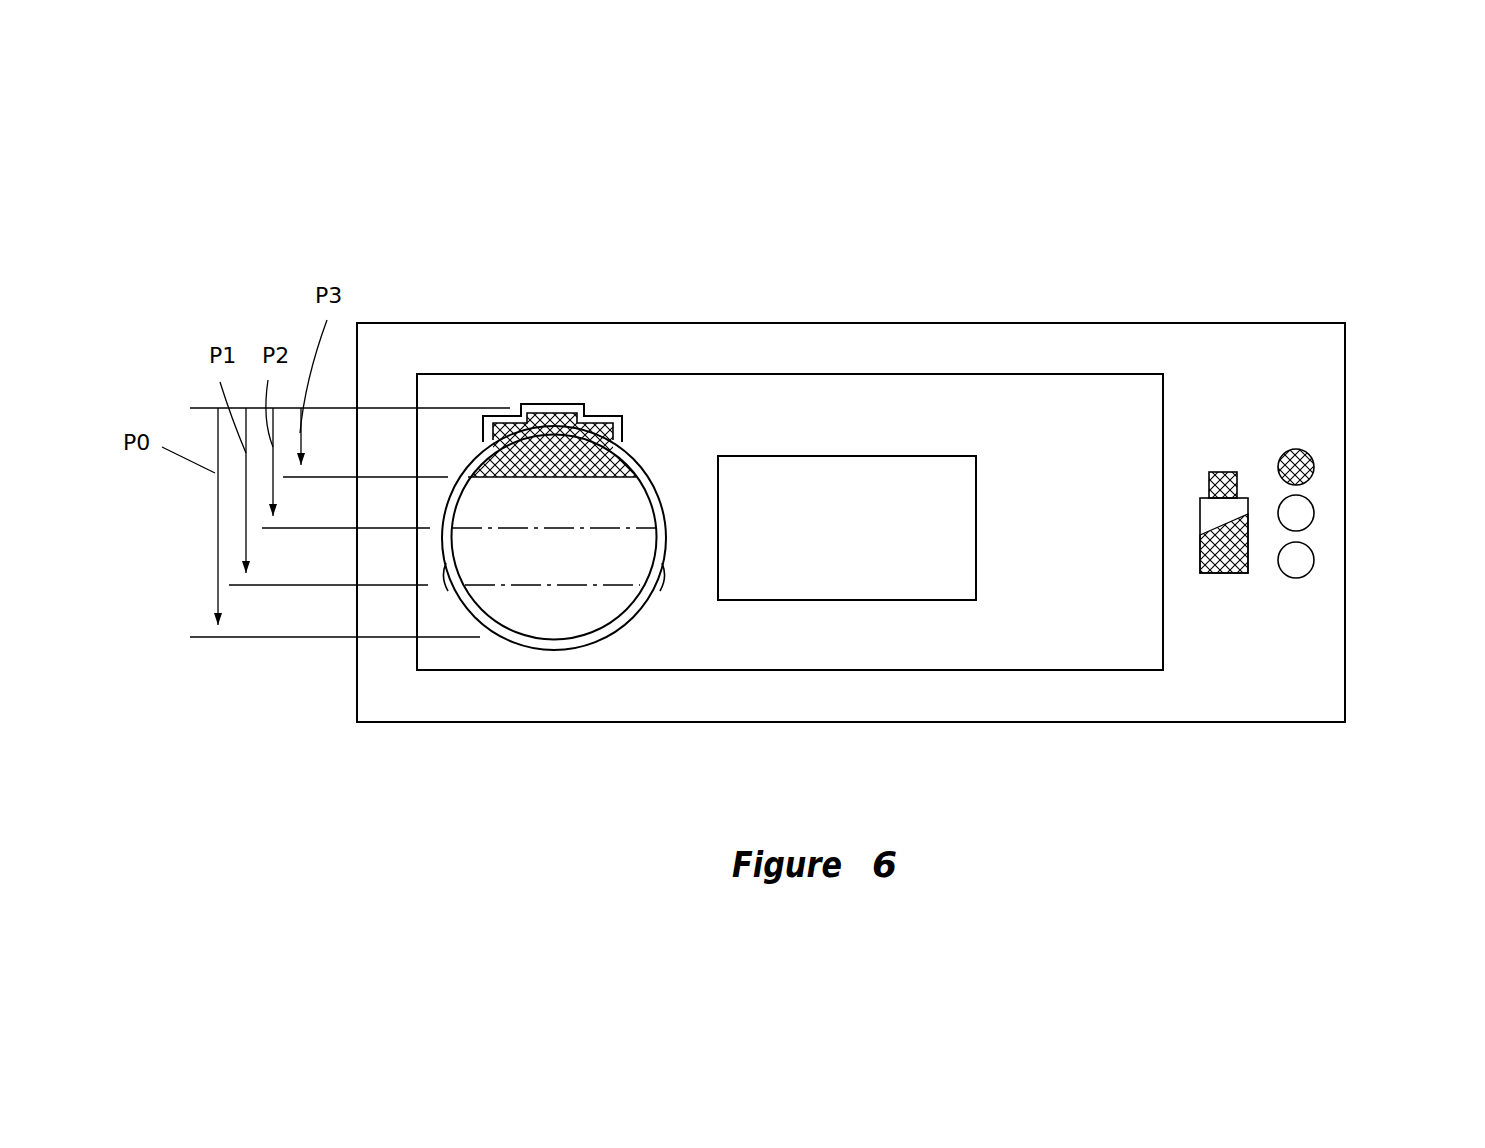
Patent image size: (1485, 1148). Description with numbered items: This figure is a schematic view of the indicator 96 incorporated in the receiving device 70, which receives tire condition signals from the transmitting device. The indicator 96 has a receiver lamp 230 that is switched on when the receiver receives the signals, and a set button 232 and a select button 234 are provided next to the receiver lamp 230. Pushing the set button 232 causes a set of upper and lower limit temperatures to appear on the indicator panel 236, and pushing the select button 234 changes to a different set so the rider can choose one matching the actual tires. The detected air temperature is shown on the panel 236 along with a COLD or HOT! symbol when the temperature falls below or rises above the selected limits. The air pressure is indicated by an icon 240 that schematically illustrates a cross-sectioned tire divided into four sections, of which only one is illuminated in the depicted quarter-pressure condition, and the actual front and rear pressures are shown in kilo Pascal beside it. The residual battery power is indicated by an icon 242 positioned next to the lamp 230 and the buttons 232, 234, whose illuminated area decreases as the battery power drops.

The receiving device 70 is at (940, 254).
The indicator 96 is at (1069, 313).
The indicator panel 236 is at (680, 347).
The icon 240 is at (520, 637).
The icon 242 is at (1225, 573).
The receiver lamp 230 is at (1315, 463).
The set button 232 is at (1315, 511).
The select button 234 is at (1315, 556).